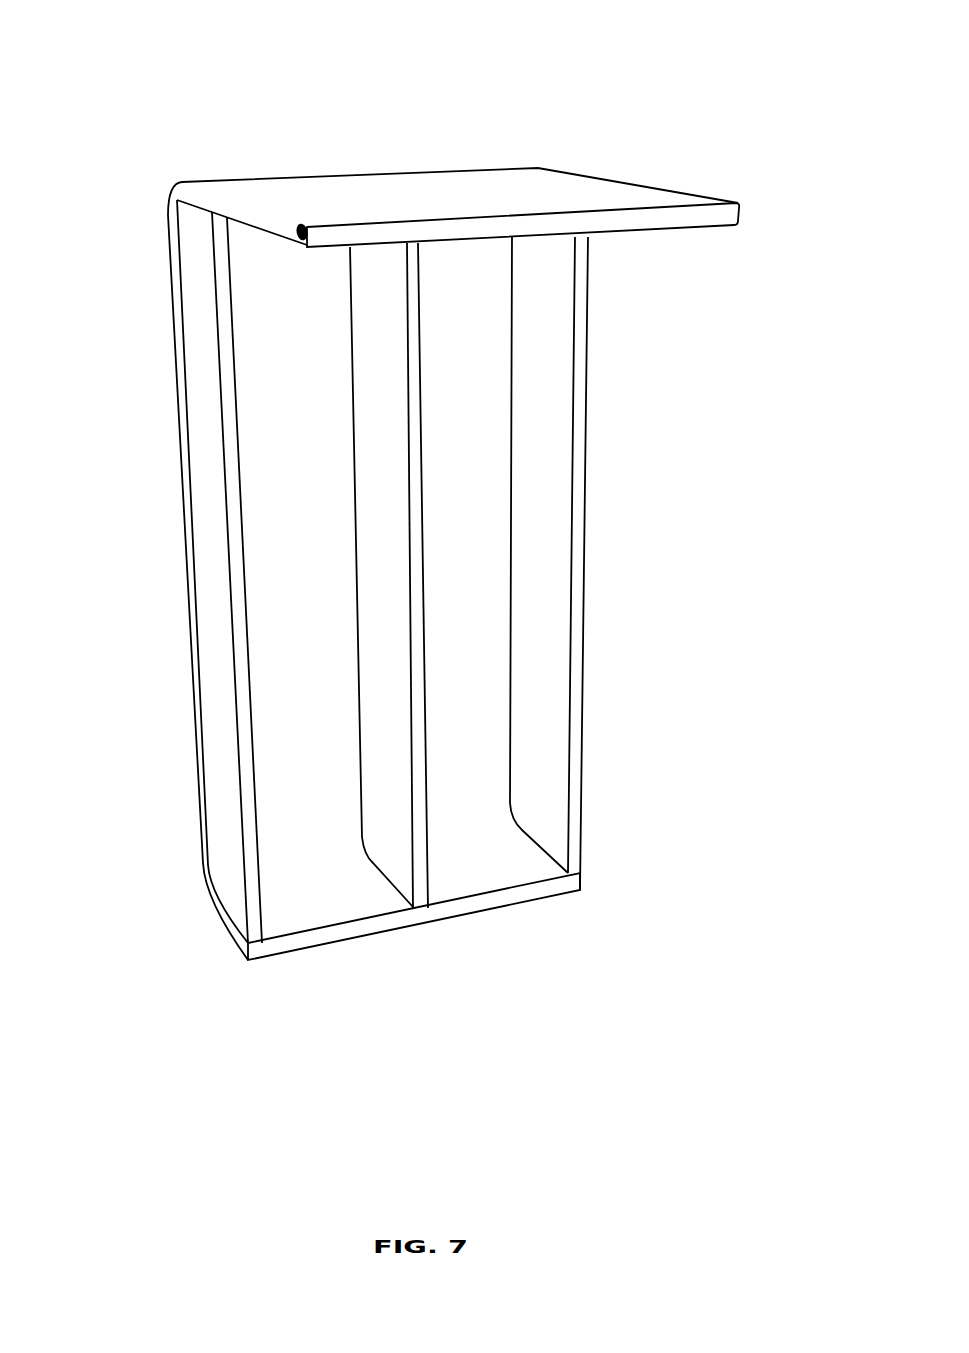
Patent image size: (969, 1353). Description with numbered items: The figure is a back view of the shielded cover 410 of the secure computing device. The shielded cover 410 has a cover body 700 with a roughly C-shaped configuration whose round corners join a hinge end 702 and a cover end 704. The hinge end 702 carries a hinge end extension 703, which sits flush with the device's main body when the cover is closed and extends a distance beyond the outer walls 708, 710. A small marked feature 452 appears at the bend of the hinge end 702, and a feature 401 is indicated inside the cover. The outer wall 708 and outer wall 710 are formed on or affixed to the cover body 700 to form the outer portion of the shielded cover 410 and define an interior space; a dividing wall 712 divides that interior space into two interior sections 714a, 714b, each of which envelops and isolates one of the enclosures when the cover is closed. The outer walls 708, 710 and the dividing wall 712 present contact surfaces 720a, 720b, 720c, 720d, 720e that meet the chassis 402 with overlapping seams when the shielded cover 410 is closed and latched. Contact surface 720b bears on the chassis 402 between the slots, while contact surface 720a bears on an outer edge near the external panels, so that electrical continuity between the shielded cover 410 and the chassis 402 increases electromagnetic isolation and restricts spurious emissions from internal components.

The shielded cover 410 is at (214, 73).
The attachment point 452 is at (300, 226).
The cover body 700 is at (453, 207).
The hinge end extension 703 is at (567, 197).
The hinge end 702 is at (650, 220).
The contact surface 720e is at (388, 250).
The interior section 714a is at (255, 315).
The interior section 714b is at (497, 311).
The contact surface 720a is at (240, 410).
The contact surface 720b is at (424, 412).
The contact surface 720c is at (589, 405).
The contact surface 720d is at (414, 920).
The chassis 402 is at (302, 562).
The second side panel 401 is at (475, 573).
The outer wall 710 is at (575, 655).
The dividing wall 712 is at (417, 772).
The outer wall 708 is at (247, 777).
The cover end 704 is at (528, 890).